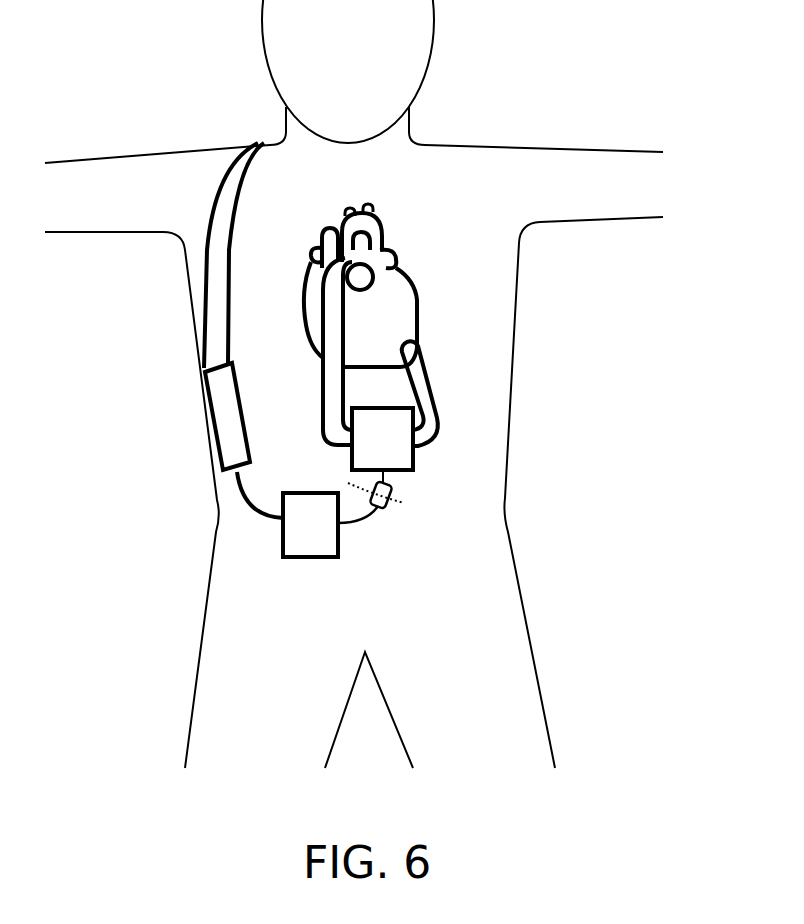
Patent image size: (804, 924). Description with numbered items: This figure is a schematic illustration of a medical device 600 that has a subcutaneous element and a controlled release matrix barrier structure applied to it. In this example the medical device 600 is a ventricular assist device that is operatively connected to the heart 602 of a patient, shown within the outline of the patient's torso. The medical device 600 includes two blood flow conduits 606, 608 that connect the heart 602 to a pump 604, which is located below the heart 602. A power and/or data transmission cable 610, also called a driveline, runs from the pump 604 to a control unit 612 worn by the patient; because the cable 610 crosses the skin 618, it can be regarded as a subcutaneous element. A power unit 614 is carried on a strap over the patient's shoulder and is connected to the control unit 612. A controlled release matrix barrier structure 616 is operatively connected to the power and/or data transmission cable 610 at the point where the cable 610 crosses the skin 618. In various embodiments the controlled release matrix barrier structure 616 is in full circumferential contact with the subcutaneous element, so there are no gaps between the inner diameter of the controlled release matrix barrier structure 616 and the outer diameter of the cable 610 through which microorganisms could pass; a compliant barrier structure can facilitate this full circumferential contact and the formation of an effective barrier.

The medical device 600 is at (455, 398).
The heart 602 is at (395, 305).
The pump 604 is at (398, 455).
The blood flow conduit 606 is at (422, 382).
The blood flow conduit 608 is at (330, 390).
The power and/or data transmission cable 610 is at (352, 525).
The control unit 612 is at (302, 540).
The power unit 614 is at (220, 406).
The controlled release matrix barrier structure 616 is at (378, 507).
The skin 618 is at (420, 506).